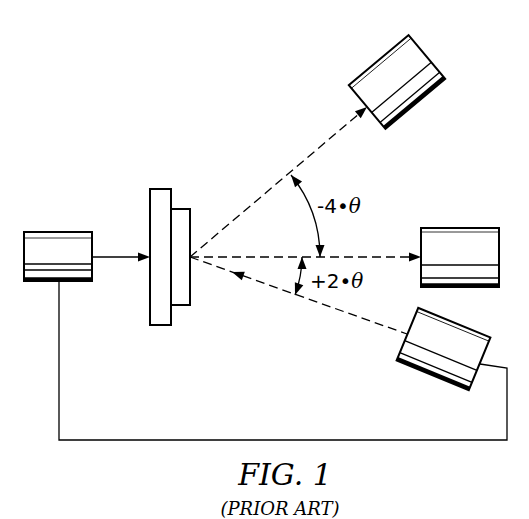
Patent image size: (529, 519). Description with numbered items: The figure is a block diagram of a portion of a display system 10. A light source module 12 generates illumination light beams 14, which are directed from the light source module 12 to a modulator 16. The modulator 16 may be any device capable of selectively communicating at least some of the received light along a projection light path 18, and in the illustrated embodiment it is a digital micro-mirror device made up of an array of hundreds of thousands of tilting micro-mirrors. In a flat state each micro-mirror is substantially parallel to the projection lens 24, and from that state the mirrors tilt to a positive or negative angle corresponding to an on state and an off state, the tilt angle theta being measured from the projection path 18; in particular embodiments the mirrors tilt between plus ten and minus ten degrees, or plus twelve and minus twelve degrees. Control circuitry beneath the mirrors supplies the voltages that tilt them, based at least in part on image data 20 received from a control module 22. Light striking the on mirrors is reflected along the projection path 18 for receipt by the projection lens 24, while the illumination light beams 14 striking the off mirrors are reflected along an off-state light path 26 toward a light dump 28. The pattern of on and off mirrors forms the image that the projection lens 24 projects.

The display system 10 is at (196, 82).
The light source module 12 is at (432, 377).
The illumination light beams 14 is at (348, 314).
The modulator 16 is at (160, 189).
The projection light path 18 is at (372, 256).
The image data 20 is at (120, 255).
The control module 22 is at (48, 232).
The projection lens 24 is at (461, 228).
The off-state light path 26 is at (318, 149).
The light dump 28 is at (378, 63).